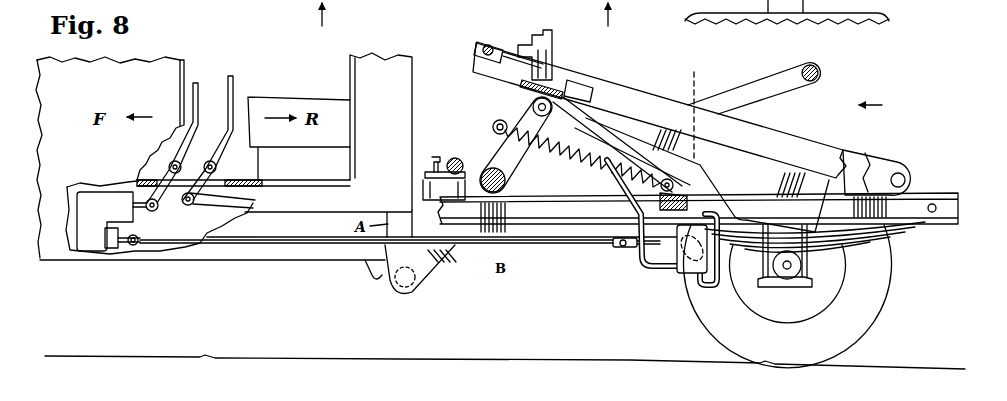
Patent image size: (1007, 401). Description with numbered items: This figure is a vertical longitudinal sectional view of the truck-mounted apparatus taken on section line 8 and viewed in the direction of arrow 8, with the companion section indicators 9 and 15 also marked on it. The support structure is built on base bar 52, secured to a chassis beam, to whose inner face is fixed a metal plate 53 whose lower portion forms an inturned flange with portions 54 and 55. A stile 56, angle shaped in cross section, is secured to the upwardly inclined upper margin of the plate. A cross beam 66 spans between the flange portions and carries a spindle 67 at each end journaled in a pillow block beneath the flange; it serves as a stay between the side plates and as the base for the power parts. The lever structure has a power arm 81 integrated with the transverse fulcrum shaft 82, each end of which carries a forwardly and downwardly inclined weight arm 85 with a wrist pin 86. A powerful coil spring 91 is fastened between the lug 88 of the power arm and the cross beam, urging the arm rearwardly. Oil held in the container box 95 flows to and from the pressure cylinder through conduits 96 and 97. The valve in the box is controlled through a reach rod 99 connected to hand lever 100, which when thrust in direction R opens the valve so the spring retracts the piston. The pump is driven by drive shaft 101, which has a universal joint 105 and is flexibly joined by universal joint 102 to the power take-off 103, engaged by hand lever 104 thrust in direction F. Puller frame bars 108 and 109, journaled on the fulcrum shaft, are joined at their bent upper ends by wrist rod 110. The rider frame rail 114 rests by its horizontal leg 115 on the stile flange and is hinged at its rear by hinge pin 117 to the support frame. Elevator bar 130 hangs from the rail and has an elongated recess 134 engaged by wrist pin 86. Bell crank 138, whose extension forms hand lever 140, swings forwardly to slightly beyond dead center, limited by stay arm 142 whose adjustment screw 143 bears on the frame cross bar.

The section line 8—8 and arrow 8 is at (322, 36).
The section indicator 9 is at (608, 36).
The section indicator 15 is at (798, 108).
The base bar 52 is at (594, 192).
The metal plate 53 is at (762, 173).
The flange portion 54 is at (712, 198).
The flange portion 55 is at (760, 216).
The stile 56 is at (578, 92).
The cross beam 66 is at (669, 208).
The spindle 67 is at (698, 190).
The power arm 81 is at (522, 110).
The fulcrum shaft 82 is at (516, 145).
The forward weight arm 85 is at (557, 5).
The wrist pin 86 is at (418, 280).
The lug 88 is at (495, 135).
The coil spring 91 is at (589, 159).
The container box 95 is at (683, 269).
The conduit 96 is at (715, 289).
The conduit 97 is at (648, 268).
The reach rod 99 is at (220, 204).
The hand lever 100 is at (235, 74).
The drive shaft 101 is at (571, 247).
The universal joint 102 is at (128, 250).
The power take-off 103 is at (104, 239).
The hand lever 104 is at (196, 80).
The universal joint 105 is at (620, 248).
The bar 108 is at (762, 12).
The bar 109 is at (736, 85).
The wrist rod 110 is at (819, 80).
The rail 114 is at (855, 155).
The horizontal leg 115 is at (760, 130).
The hinge pin 117 is at (906, 178).
The elevator bar 130 is at (513, 43).
The elongated recess 134 is at (385, 278).
The bell crank 138 is at (456, 6).
The hand lever 140 is at (399, 10).
The stay arm 142 is at (428, 174).
The adjustment screw 143 is at (437, 157).